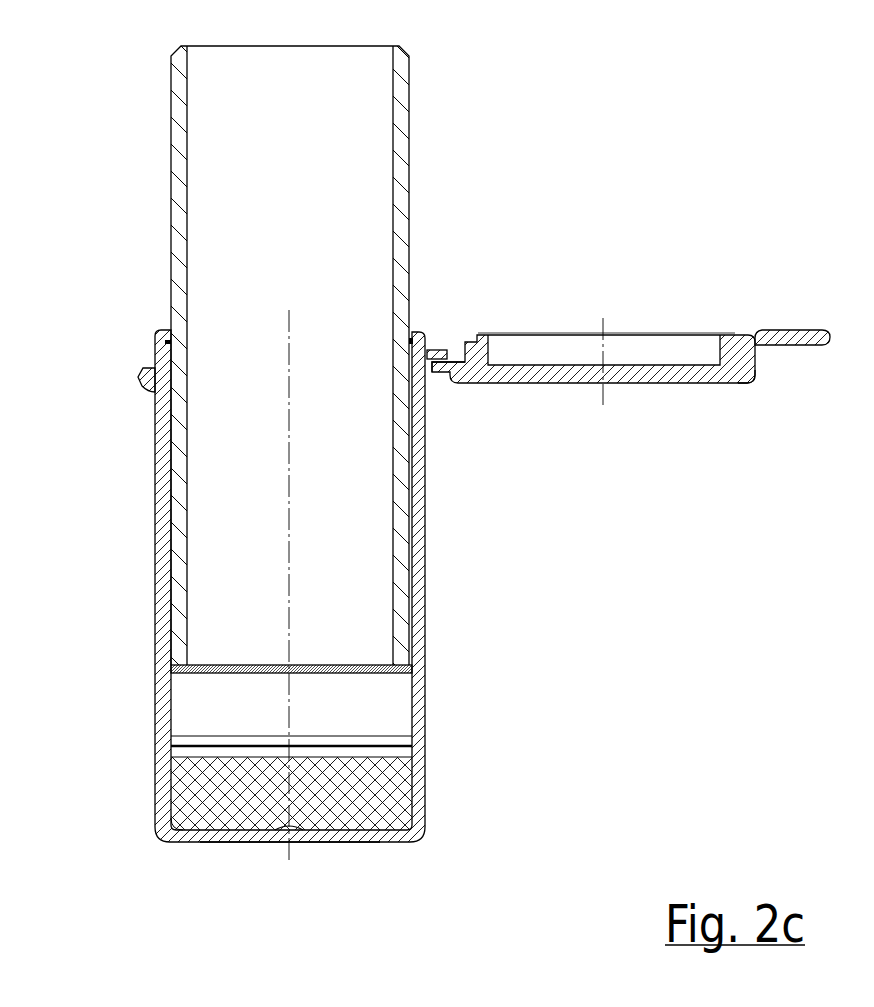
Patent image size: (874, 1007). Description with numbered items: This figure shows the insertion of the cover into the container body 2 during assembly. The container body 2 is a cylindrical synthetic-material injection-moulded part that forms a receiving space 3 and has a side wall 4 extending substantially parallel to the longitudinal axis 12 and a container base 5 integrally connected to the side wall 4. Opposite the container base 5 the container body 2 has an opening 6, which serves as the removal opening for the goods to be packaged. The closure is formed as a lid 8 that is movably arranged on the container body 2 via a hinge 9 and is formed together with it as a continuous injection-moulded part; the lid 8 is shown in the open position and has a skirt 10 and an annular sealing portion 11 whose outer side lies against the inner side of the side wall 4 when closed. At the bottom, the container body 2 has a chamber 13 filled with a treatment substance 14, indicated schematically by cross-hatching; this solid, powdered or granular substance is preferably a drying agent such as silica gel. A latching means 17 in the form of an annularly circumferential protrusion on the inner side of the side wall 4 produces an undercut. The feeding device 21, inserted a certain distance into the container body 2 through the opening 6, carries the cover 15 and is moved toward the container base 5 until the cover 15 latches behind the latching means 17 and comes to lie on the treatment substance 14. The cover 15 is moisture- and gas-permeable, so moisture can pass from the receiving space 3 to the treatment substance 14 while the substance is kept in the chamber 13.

The container body 2 is at (427, 583).
The receiving space 3 is at (338, 525).
The side wall 4 is at (427, 439).
The container base 5 is at (258, 843).
The opening 6 is at (414, 340).
The lid 8 is at (657, 370).
The hinge 9 is at (445, 350).
The skirt 10 is at (757, 380).
The sealing portion 11 is at (728, 333).
The longitudinal axis 12 is at (288, 853).
The chamber 13 is at (193, 803).
The treatment substance 14 is at (353, 793).
The cover 15 is at (345, 672).
The latching means 17 is at (168, 745).
The feeding device 21 is at (182, 393).